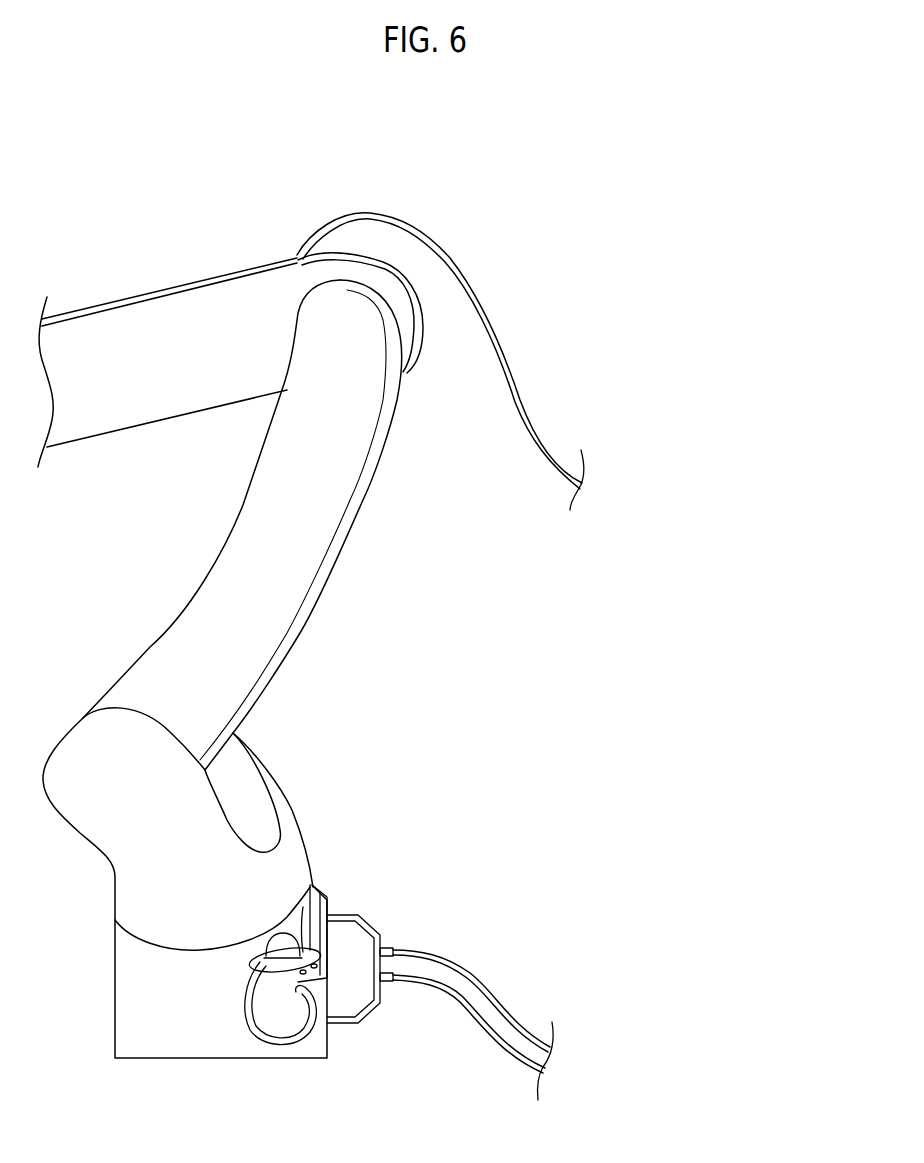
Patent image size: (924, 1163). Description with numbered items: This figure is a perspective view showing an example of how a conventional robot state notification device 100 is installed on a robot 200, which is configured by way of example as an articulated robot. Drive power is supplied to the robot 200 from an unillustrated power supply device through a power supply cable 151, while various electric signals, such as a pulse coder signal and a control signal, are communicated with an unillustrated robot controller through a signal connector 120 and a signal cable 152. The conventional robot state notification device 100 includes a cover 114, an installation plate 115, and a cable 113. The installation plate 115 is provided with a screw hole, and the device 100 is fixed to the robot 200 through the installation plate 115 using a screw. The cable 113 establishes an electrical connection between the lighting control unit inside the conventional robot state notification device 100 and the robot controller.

The conventional robot state notification device 100 is at (287, 947).
The cable 113 is at (282, 1040).
The cover 114 is at (252, 946).
The installation plate 115 is at (313, 892).
The signal connector 120 is at (347, 920).
The power supply cable 151 is at (447, 258).
The signal cable 152 is at (502, 1017).
The robot 200 is at (133, 298).